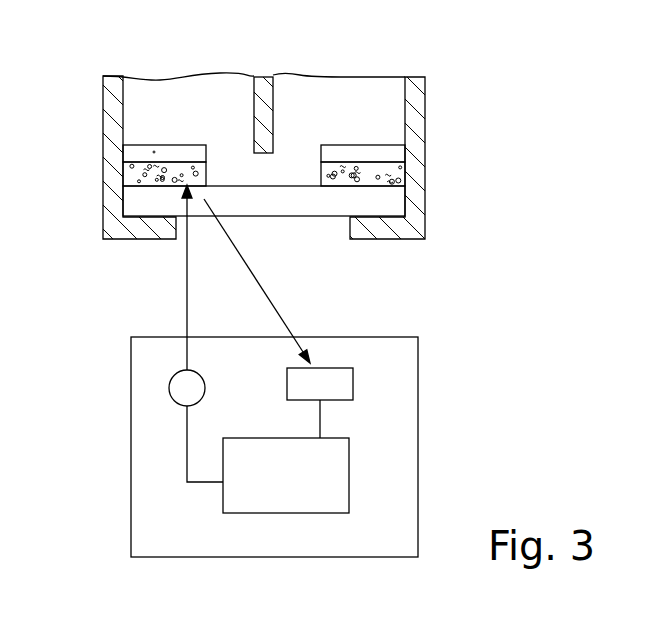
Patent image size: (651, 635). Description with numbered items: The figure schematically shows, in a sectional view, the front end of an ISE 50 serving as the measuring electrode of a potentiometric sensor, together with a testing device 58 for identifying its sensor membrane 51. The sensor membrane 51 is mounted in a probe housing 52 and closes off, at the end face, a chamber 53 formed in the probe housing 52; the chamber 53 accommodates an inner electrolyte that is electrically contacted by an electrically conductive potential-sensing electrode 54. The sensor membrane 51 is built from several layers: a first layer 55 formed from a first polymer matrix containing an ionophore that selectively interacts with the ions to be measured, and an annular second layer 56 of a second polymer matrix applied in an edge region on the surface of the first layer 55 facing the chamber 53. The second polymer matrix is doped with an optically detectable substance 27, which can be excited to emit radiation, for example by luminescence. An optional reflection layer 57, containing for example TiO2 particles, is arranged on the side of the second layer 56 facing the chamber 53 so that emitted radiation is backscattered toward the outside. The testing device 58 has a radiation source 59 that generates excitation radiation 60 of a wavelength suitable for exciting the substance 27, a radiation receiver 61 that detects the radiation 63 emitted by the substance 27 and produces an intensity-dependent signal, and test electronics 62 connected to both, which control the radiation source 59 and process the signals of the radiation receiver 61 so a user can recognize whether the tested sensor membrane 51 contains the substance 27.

The ISE 50 is at (314, 158).
The sensor membrane 51 is at (318, 236).
The probe housing 52 is at (117, 150).
The chamber 53 is at (378, 121).
The potential-sensing electrode 54 is at (267, 107).
The first layer 55 is at (392, 200).
The second layer 56 is at (128, 170).
The reflection layer 57 is at (154, 150).
The testing device 58 is at (418, 437).
The radiation source 59 is at (173, 385).
The excitation radiation 60 is at (187, 306).
The radiation receiver 61 is at (308, 396).
The test electronics 62 is at (274, 491).
The emitted radiation 63 is at (272, 302).
The optically detectable substance 27 is at (390, 174).